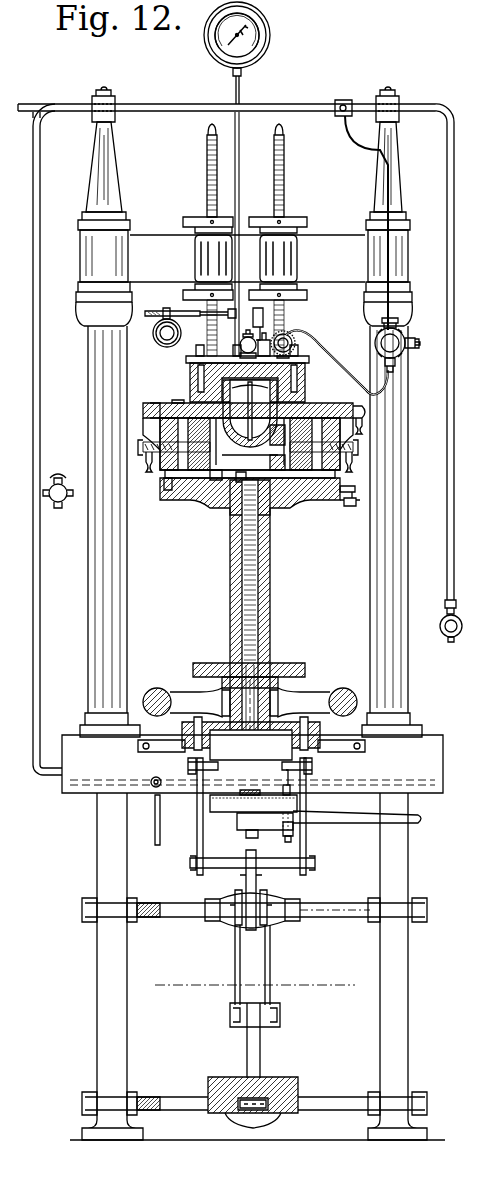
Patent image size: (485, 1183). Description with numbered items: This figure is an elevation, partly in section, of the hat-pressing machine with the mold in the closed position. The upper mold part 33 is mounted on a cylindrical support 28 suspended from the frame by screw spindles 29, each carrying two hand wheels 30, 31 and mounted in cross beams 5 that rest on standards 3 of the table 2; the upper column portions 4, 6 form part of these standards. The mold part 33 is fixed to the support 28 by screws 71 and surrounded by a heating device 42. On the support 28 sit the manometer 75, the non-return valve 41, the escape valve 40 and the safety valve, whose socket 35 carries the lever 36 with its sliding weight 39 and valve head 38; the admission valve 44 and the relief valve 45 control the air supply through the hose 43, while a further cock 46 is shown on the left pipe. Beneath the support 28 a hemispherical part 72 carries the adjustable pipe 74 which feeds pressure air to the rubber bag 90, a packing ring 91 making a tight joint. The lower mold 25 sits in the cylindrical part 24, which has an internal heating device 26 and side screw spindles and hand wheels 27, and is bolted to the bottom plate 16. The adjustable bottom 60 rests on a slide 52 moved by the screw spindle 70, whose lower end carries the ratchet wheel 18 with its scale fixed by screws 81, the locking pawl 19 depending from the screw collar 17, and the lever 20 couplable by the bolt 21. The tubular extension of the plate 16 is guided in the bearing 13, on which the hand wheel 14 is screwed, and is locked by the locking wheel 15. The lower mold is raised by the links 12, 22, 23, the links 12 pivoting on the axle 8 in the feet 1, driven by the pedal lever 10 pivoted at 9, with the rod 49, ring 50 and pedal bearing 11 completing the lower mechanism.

The feet 1 is at (408, 965).
The table 2 is at (415, 745).
The standards 3 is at (400, 487).
The column capital 4 is at (412, 292).
The cross beams or bridges 5 is at (247, 258).
The column top 6 is at (398, 172).
The axle 8 is at (322, 908).
The pivot 9 is at (192, 1100).
The pedal lever 10 is at (290, 1093).
The bearing insert 11 is at (284, 1080).
The links 12 is at (248, 896).
The bearing 13 is at (311, 722).
The hand wheel 14 is at (345, 689).
The locking wheel 15 is at (302, 662).
The bottom plate 16 is at (278, 500).
The screw collar or ring 17 is at (187, 766).
The ratchet wheel 18 is at (228, 812).
The locking pawl 19 is at (302, 786).
The lever 20 is at (424, 820).
The bolt 21 is at (292, 834).
The links 22 is at (197, 840).
The links 23 is at (270, 952).
The cylindrical part 24 is at (150, 425).
The lower mold 25 is at (169, 490).
The heating device 26 is at (346, 506).
The screw spindles and hand wheels 27 is at (360, 443).
The cylindrical support 28 is at (190, 378).
The screw spindles 29 is at (285, 170).
The hand wheel 30 is at (307, 296).
The hand wheel 31 is at (307, 222).
The upper mold part 33 is at (155, 403).
The socket 35 is at (258, 306).
The lever 36 is at (180, 311).
The valve head 38 is at (233, 332).
The sliding weight 39 is at (154, 340).
The escape valve 40 is at (293, 348).
The non-return valve 41 is at (292, 342).
The heating device 42 is at (368, 409).
The hose 43 is at (290, 334).
The admission valve 44 is at (398, 350).
The valve 45 is at (416, 340).
The cock 46 is at (63, 506).
The rod 49 is at (161, 810).
The ring 50 is at (153, 788).
The slide 52 is at (238, 490).
The adjustable bottom 60 is at (214, 481).
The screw spindle 70 is at (270, 572).
The screws 71 is at (309, 362).
The hemispherical part 72 is at (298, 395).
The adjustable pipe 74 is at (291, 437).
The manometer 75 is at (270, 37).
The screws 81 is at (297, 820).
The rubber bag 90 is at (285, 462).
The packing ring 91 is at (174, 410).